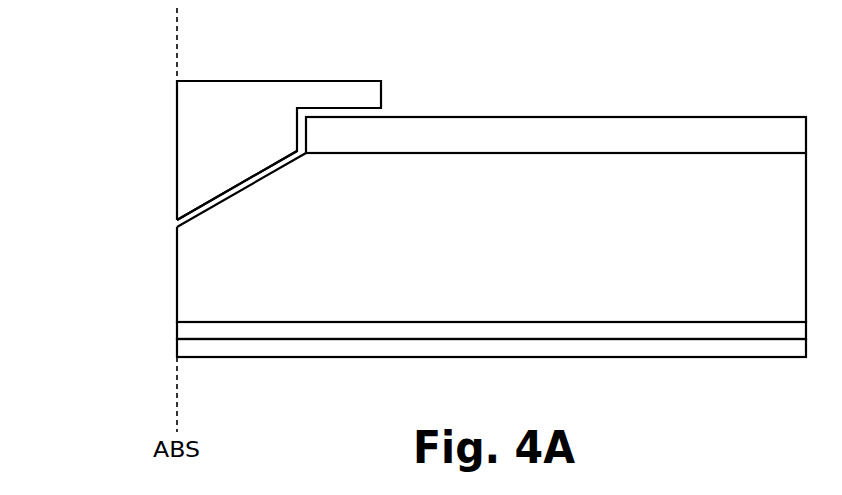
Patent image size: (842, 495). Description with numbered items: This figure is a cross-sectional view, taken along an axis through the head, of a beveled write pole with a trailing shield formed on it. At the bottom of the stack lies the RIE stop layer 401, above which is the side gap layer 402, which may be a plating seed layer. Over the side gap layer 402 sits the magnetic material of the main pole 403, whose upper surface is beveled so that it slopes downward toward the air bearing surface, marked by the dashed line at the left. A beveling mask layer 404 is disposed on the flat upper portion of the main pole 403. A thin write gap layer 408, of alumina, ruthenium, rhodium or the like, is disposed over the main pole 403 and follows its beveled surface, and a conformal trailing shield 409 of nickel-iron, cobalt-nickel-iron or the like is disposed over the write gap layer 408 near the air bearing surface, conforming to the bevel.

The RIE stop layer 401 is at (411, 368).
The side gap layer 402 is at (411, 310).
The main pole 403 is at (491, 237).
The beveling mask layer 404 is at (556, 135).
The write gap layer 408 is at (161, 189).
The trailing shield 409 is at (279, 150).